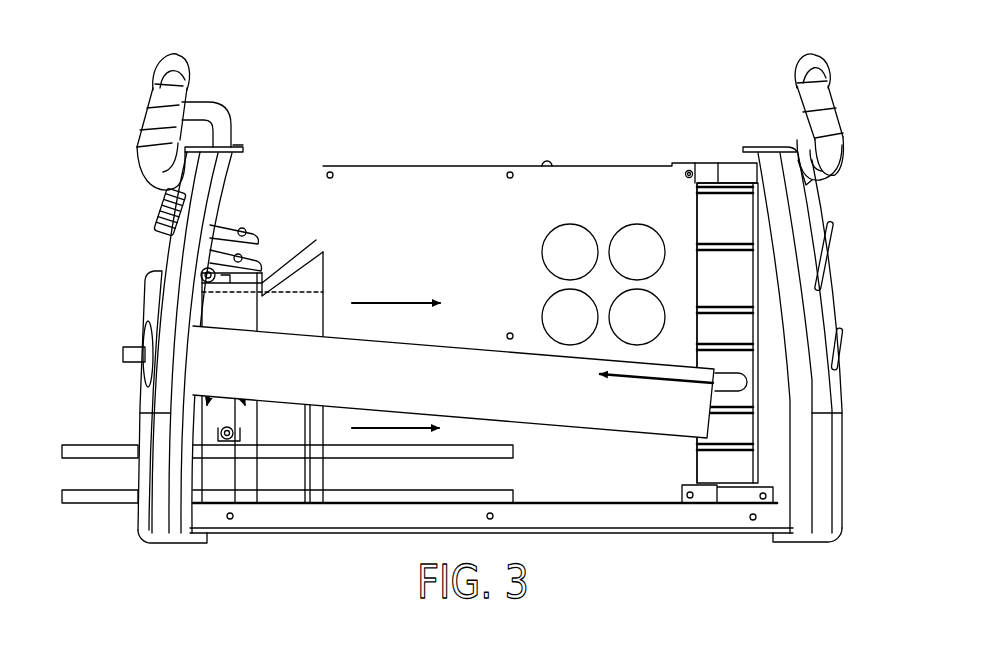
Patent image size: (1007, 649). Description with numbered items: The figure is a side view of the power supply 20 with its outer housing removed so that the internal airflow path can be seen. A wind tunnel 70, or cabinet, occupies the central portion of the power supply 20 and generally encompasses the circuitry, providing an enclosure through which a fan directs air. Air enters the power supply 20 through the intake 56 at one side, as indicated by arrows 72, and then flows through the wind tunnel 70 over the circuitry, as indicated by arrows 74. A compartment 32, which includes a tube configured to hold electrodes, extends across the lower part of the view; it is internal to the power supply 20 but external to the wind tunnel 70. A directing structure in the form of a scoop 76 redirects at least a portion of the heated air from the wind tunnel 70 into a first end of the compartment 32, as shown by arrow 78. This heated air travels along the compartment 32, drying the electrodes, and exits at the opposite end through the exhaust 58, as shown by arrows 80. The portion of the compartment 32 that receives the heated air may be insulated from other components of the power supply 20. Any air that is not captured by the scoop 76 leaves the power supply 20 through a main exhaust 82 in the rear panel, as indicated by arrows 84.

The power supply 20 is at (378, 60).
The compartment 32 is at (560, 417).
The intake 56 is at (145, 296).
The exhaust 58 is at (243, 362).
The wind tunnel 70 is at (457, 196).
The arrows 72 is at (118, 327).
The arrows 74 is at (393, 303).
The scoop 76 is at (722, 373).
The arrow 78 is at (662, 380).
The arrows 80 is at (232, 375).
The main exhaust 82 is at (830, 251).
The arrows 84 is at (882, 248).